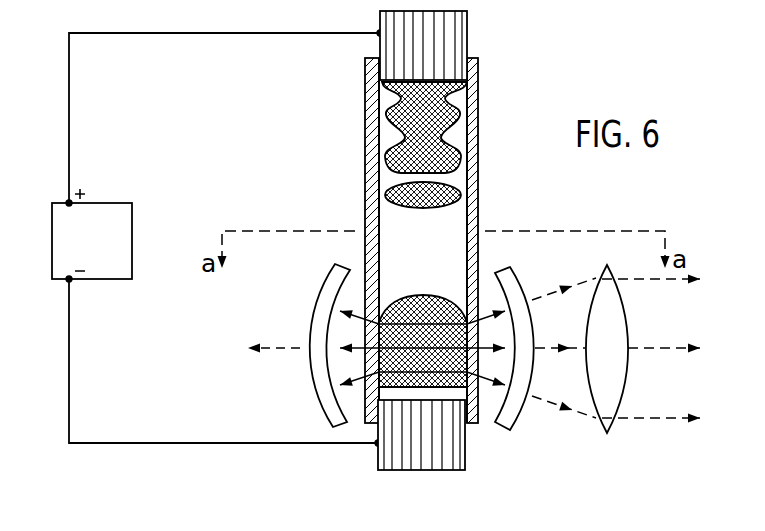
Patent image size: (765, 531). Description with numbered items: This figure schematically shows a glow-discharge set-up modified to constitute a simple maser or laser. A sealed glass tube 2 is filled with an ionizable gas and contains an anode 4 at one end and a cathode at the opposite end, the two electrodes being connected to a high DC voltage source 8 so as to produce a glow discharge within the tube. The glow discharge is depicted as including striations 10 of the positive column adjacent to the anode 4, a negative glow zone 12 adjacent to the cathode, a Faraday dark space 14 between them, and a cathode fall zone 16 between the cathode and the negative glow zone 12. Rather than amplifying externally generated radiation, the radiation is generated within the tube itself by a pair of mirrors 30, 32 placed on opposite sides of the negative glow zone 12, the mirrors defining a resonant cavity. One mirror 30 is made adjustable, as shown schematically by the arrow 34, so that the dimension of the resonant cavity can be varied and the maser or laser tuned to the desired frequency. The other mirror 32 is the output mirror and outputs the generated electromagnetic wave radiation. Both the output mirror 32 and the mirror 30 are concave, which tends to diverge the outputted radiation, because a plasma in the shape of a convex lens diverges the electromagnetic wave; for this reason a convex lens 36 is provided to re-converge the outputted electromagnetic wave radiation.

The sealed glass tube 2 is at (480, 115).
The anode 4 is at (452, 41).
The high DC voltage source 8 is at (122, 218).
The striations of the positive column 10 is at (379, 188).
The negative glow zone 12 is at (447, 297).
The Faraday dark space 14 is at (392, 228).
The cathode fall zone 16 is at (466, 396).
The mirror 30 is at (313, 322).
The output mirror 32 is at (513, 281).
The arrow 34 is at (273, 350).
The convex lens 36 is at (617, 319).